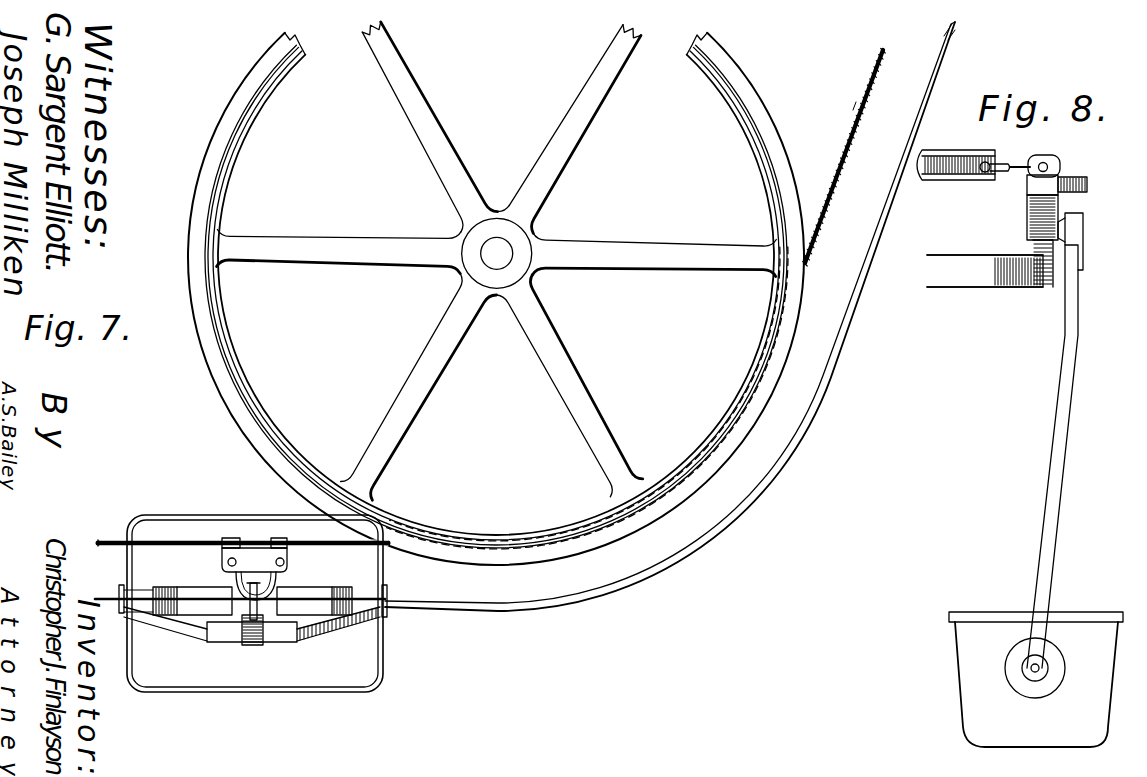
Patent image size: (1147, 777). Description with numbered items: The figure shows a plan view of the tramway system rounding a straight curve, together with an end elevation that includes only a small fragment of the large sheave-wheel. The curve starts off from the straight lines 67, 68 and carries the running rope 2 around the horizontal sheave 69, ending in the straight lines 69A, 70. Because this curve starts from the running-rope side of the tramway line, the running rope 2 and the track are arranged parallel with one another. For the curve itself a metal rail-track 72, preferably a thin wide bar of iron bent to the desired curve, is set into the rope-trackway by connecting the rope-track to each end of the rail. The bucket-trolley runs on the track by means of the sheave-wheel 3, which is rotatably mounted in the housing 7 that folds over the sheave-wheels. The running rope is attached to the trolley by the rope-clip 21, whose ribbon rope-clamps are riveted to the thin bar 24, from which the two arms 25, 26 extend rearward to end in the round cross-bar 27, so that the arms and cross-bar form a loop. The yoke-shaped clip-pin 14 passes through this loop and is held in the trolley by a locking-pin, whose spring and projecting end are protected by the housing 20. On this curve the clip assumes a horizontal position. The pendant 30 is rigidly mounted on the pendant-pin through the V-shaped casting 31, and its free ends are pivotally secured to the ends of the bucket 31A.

In FIG. 7, the running rope 2 is at (878, 58).
In FIG. 8, the sheave-wheel 3 is at (1033, 251).
In FIG. 7, the housing 7 is at (181, 588).
In FIG. 8, the housing 7 is at (1027, 216).
In FIG. 7, the clip-pin 14 is at (258, 601).
In FIG. 8, the clip-pin 14 is at (1060, 158).
In FIG. 7, the housing 20 is at (253, 645).
In FIG. 8, the housing 20 is at (1087, 185).
In FIG. 7, the rope-clip 21 is at (272, 573).
In FIG. 8, the rope-clip 21 is at (1020, 166).
In FIG. 7, the bar 24 is at (237, 584).
In FIG. 8, the bar 24 is at (998, 172).
In FIG. 7, the arm 25 is at (192, 601).
In FIG. 7, the arm 26 is at (314, 594).
In FIG. 7, the cross-bar 27 is at (246, 622).
In FIG. 8, the cross-bar 27 is at (1058, 166).
In FIG. 7, the pendant 30 is at (336, 641).
In FIG. 8, the pendant 30 is at (1062, 440).
In FIG. 8, the V-shaped casting 31 is at (1083, 230).
In FIG. 7, the bucket 31A is at (373, 642).
In FIG. 8, the bucket 31A is at (963, 676).
In FIG. 7, the straight line 67 is at (103, 554).
In FIG. 7, the straight line 68 is at (103, 596).
In FIG. 7, the sheave 69 is at (521, 538).
In FIG. 8, the sheave 69 is at (956, 177).
In FIG. 7, the straight line 69A is at (852, 109).
In FIG. 7, the straight line 70 is at (914, 110).
In FIG. 7, the metal rail-track 72 is at (710, 535).
In FIG. 8, the metal rail-track 72 is at (963, 280).